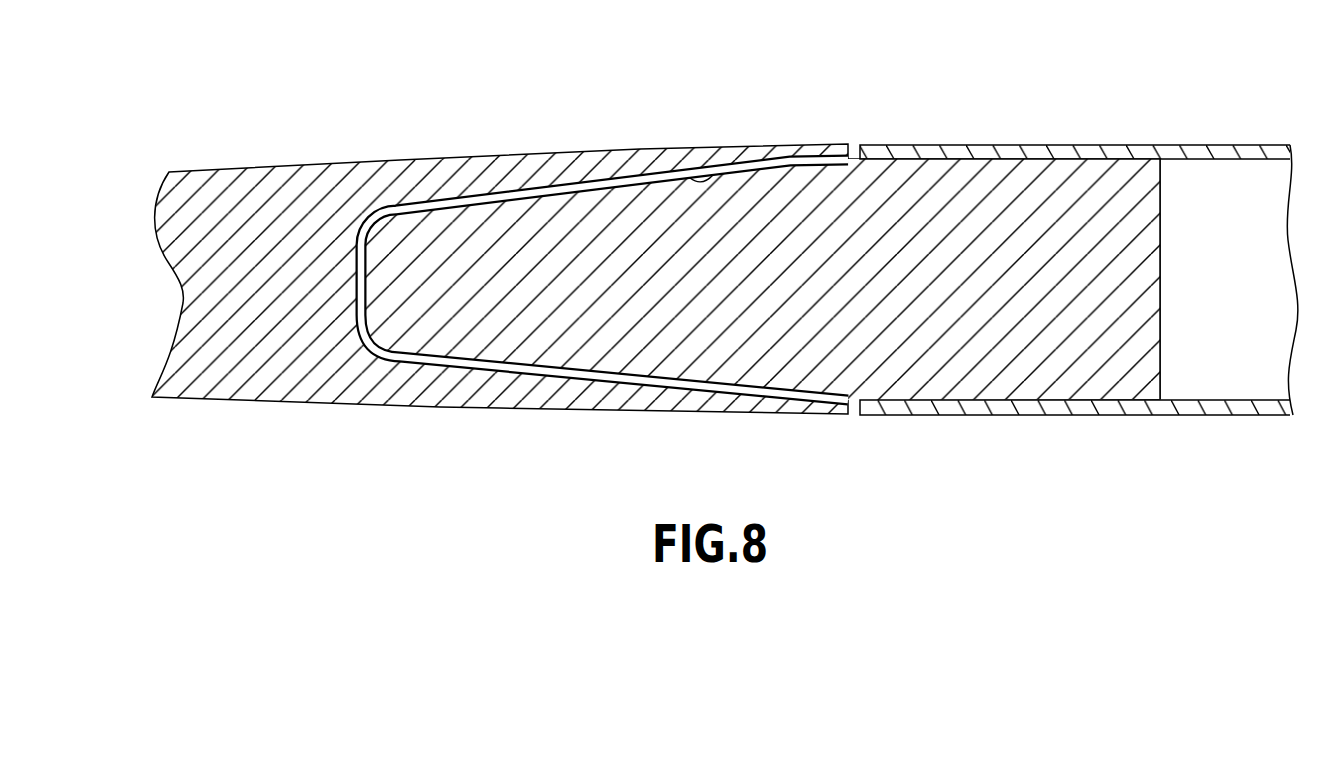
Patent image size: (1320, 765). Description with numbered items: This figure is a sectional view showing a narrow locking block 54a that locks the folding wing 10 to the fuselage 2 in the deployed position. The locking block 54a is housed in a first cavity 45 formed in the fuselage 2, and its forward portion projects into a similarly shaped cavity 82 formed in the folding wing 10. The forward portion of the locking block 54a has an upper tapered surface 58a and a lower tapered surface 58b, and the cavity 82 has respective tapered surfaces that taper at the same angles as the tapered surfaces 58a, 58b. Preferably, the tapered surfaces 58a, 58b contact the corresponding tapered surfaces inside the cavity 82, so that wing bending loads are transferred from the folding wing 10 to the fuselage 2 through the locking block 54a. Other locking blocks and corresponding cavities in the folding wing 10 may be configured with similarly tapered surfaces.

The folding wing 10 is at (400, 160).
The fuselage 2 is at (1082, 143).
The first cavity 45 is at (1223, 157).
The upper tapered surface 58a is at (560, 192).
The lower tapered surface 58b is at (573, 372).
The cavity 82 is at (705, 175).
The narrow locking block 54a is at (905, 399).